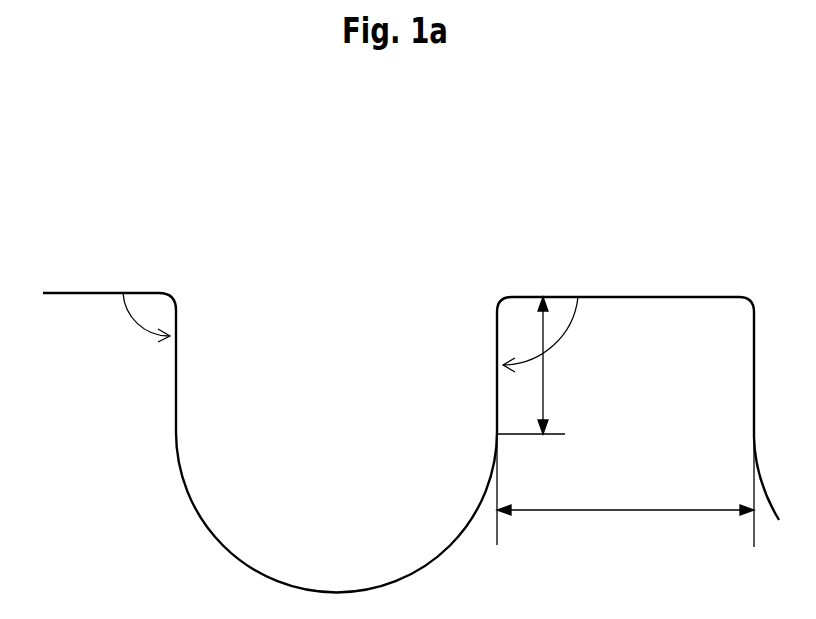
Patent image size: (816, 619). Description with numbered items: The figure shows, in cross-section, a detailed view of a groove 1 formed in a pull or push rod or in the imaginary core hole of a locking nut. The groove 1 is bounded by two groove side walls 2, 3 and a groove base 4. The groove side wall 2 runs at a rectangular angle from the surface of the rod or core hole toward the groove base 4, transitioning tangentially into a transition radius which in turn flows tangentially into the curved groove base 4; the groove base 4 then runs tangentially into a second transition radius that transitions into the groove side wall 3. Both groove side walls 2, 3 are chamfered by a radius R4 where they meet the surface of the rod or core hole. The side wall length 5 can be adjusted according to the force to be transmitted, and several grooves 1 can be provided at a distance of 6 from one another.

The groove 1 is at (411, 375).
The groove side wall 2 is at (178, 397).
The groove side wall 3 is at (497, 370).
The groove base 4 is at (307, 592).
The side wall length 5 is at (533, 365).
The distance 6 is at (625, 492).
The radius R4 is at (175, 297).